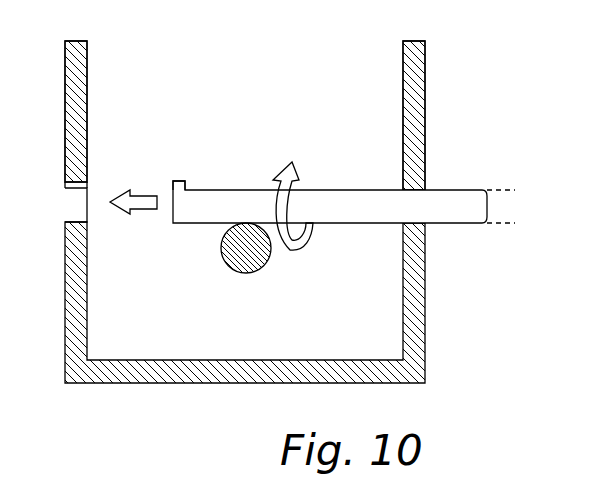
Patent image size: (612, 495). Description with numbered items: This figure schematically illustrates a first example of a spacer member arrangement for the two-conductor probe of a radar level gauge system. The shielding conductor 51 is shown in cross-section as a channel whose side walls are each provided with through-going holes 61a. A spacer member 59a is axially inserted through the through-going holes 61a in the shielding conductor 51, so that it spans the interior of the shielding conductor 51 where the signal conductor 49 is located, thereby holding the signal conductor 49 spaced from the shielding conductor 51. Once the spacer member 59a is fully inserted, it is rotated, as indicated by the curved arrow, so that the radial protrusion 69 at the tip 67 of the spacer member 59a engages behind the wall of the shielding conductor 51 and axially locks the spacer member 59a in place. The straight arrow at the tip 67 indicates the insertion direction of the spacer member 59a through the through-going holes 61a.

The shielding conductor 51 is at (424, 343).
The through-going holes 61a is at (88, 193).
The spacer member 59a is at (358, 213).
The radial protrusion 69 is at (182, 182).
The signal conductor 49 is at (253, 257).
The tip 67 is at (163, 220).